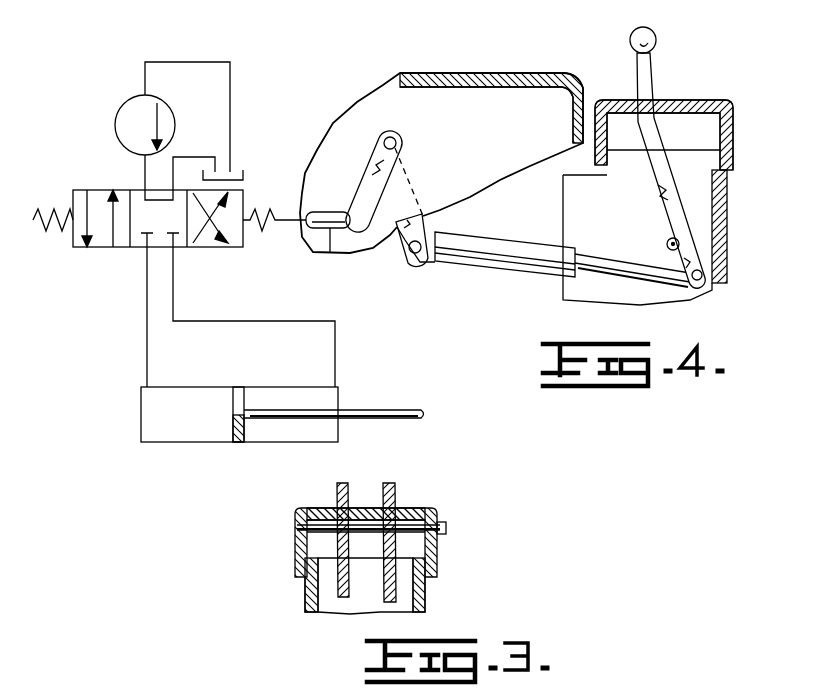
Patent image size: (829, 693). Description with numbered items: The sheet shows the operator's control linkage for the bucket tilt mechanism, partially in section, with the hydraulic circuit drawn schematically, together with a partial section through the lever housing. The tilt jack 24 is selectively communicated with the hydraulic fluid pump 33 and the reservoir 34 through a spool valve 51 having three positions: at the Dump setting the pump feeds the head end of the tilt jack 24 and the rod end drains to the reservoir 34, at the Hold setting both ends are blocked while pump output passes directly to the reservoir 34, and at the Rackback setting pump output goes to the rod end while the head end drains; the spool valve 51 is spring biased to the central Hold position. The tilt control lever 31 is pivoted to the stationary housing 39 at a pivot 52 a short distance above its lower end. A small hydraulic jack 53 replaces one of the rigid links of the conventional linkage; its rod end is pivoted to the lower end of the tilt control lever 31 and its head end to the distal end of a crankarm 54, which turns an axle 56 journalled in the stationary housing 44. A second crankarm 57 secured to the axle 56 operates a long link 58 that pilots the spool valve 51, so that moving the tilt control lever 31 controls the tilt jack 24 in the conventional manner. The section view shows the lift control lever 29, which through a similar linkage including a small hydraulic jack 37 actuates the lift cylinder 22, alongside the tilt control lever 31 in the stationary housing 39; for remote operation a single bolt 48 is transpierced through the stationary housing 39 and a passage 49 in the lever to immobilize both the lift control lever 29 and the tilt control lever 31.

In FIG. 4, the lift cylinder 22 is at (131, 0).
In FIG. 4, the tilt jack 24 is at (211, 394).
In FIG. 3, the control lever 29 is at (395, 495).
In FIG. 4, the tilt control lever 31 is at (650, 32).
In FIG. 3, the tilt control lever 31 is at (340, 500).
In FIG. 4, the hydraulic fluid pump 33 is at (126, 110).
In FIG. 4, the reservoir 34 is at (243, 176).
In FIG. 3, the hydraulic jack 37 is at (438, 553).
In FIG. 4, the stationary housing 39 is at (722, 220).
In FIG. 4, the stationary housing 44 is at (445, 83).
In FIG. 4, the bolt 48 is at (648, 122).
In FIG. 3, the bolt 48 is at (367, 508).
In FIG. 3, the passage 49 is at (430, 520).
In FIG. 4, the spool valve 51 is at (125, 272).
In FIG. 4, the pivot 52 is at (667, 244).
In FIG. 4, the hydraulic jack 53 is at (493, 260).
In FIG. 4, the crankarm 54 is at (430, 222).
In FIG. 4, the axle 56 is at (394, 142).
In FIG. 4, the second crankarm 57 is at (357, 195).
In FIG. 4, the long link 58 is at (330, 253).